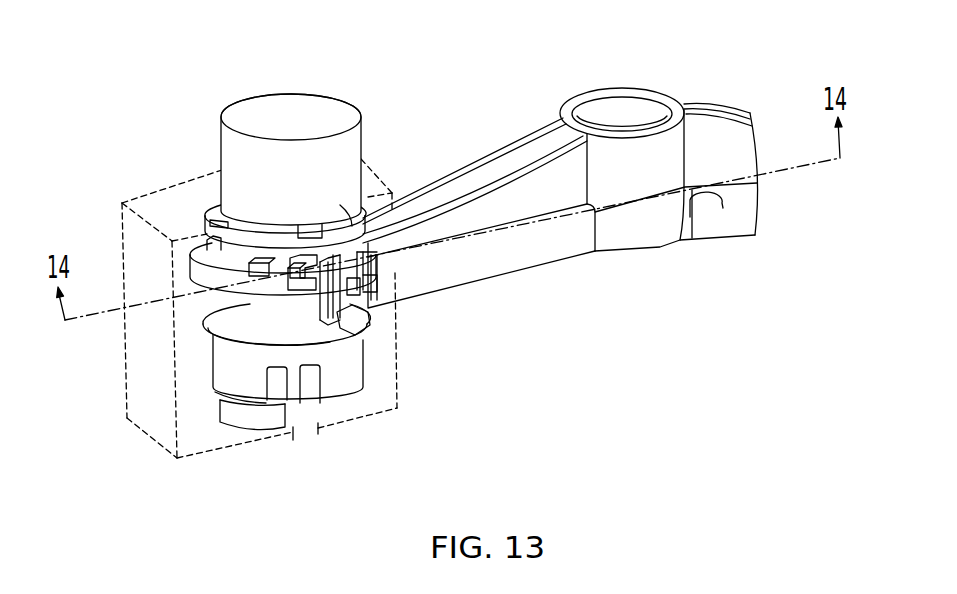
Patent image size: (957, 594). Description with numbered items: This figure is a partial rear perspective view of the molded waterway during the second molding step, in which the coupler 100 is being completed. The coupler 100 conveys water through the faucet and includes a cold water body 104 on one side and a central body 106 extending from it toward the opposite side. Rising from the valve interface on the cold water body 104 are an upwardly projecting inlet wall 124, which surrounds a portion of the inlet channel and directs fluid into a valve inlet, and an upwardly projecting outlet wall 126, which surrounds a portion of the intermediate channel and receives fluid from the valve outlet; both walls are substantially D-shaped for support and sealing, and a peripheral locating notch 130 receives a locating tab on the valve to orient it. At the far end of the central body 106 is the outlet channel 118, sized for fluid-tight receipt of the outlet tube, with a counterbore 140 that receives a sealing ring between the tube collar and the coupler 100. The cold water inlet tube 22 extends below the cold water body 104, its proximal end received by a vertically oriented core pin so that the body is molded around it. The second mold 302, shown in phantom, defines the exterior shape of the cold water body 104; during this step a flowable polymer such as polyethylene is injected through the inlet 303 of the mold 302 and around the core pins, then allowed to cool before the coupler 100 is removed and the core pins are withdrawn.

The coupler 100 is at (725, 42).
The cold water body 104 is at (215, 334).
The central body 106 is at (560, 261).
The outlet channel 118 is at (605, 110).
The inlet wall 124 is at (258, 231).
The outlet wall 126 is at (350, 226).
The locating notch 130 is at (335, 314).
The counterbore 140 is at (645, 100).
The cold water inlet tube 22 is at (240, 412).
The second mold 302 is at (343, 410).
The inlet 303 is at (308, 439).